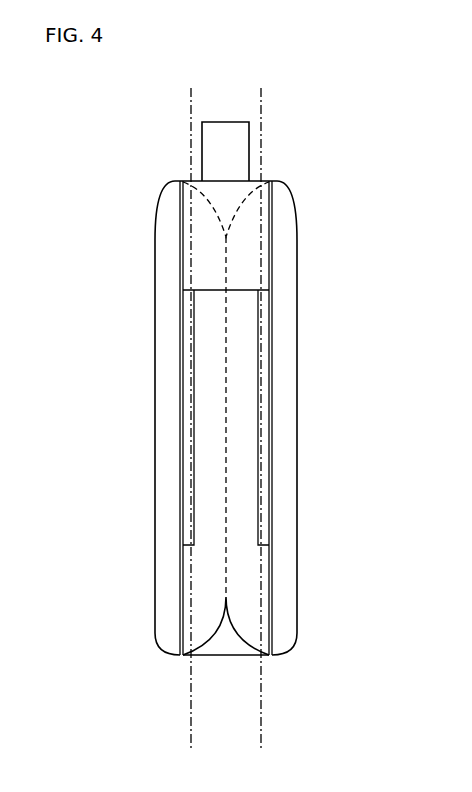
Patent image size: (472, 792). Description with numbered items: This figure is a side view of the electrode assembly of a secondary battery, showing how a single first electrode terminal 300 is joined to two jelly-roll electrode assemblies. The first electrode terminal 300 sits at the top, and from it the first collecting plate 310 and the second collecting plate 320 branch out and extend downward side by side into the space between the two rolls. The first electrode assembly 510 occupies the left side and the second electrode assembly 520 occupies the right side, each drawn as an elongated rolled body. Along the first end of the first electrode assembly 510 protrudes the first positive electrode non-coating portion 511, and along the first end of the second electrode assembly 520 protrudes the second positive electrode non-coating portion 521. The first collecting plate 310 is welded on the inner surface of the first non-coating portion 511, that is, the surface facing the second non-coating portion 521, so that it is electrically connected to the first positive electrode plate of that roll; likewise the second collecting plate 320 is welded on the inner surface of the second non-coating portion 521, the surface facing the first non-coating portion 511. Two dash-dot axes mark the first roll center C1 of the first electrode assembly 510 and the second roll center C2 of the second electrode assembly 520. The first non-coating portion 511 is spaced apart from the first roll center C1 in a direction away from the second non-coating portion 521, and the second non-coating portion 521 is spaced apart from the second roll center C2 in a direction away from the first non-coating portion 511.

The first electrode terminal 300 is at (249, 150).
The first electrode assembly 510 is at (155, 397).
The second electrode assembly 520 is at (297, 397).
The first collecting plate 310 is at (190, 497).
The second collecting plate 320 is at (262, 497).
The first positive electrode non-coating portion 511 is at (183, 562).
The second positive electrode non-coating portion 521 is at (272, 562).
The first roll center C1 is at (190, 736).
The second roll center C2 is at (262, 736).